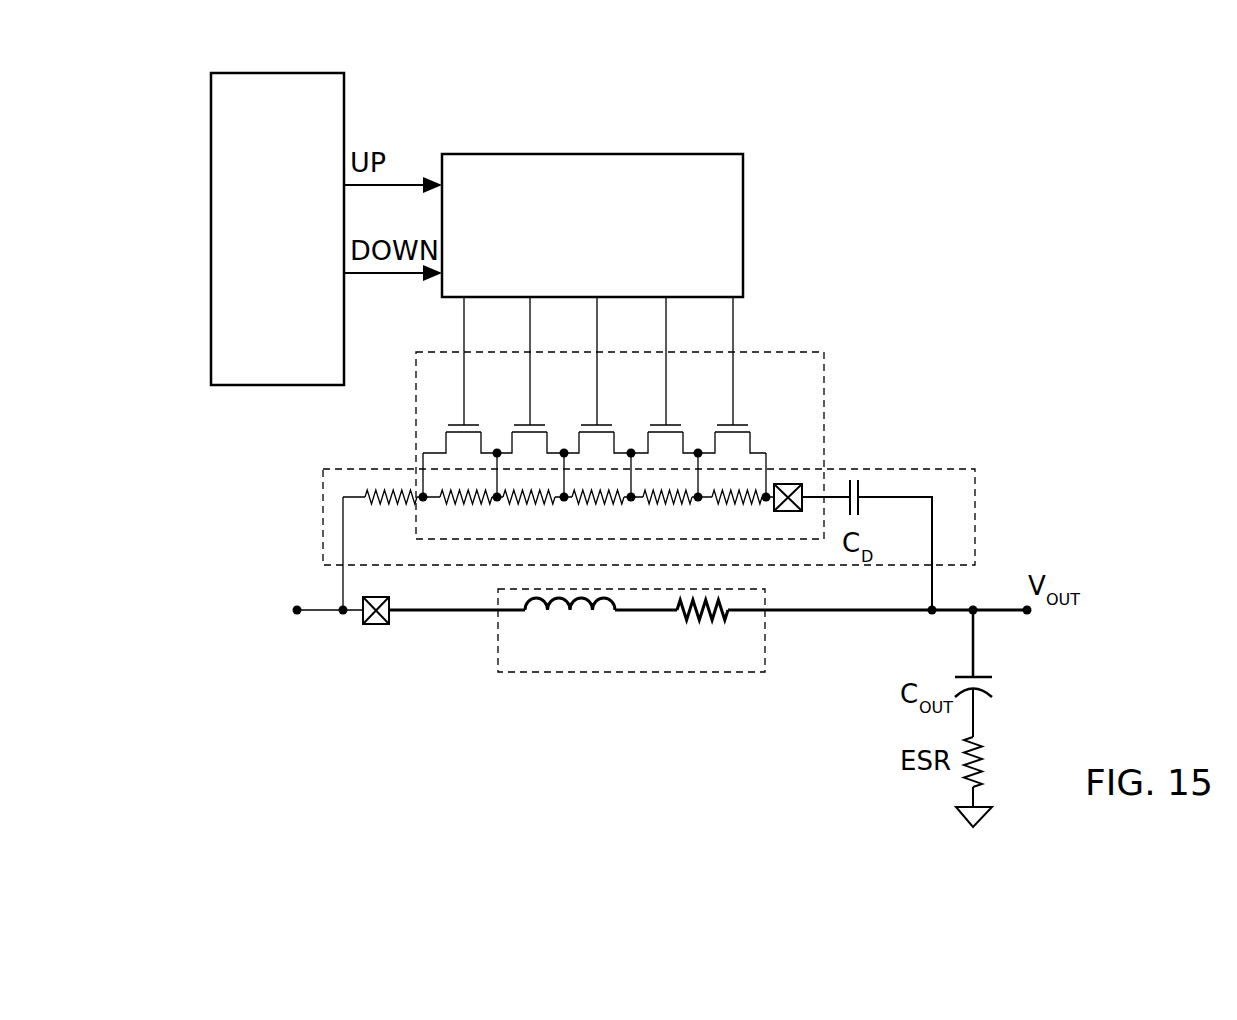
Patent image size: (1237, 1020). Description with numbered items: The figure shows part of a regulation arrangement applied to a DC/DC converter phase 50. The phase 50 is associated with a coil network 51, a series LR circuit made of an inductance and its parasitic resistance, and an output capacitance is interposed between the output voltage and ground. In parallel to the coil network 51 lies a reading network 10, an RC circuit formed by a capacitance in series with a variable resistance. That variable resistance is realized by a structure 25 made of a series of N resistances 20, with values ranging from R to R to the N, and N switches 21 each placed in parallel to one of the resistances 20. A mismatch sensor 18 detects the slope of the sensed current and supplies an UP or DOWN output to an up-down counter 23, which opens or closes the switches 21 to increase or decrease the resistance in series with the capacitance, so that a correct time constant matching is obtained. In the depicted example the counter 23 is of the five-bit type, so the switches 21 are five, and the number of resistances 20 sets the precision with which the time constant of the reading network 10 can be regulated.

The mismatch sensor 18 is at (323, 70).
The up-down counter 23 is at (648, 153).
The structure 25 is at (824, 399).
The switches 21 is at (452, 446).
The reading network 10 is at (940, 469).
The resistances 20 is at (510, 525).
The DC/DC converter phase 50 is at (333, 647).
The coil network 51 is at (757, 672).